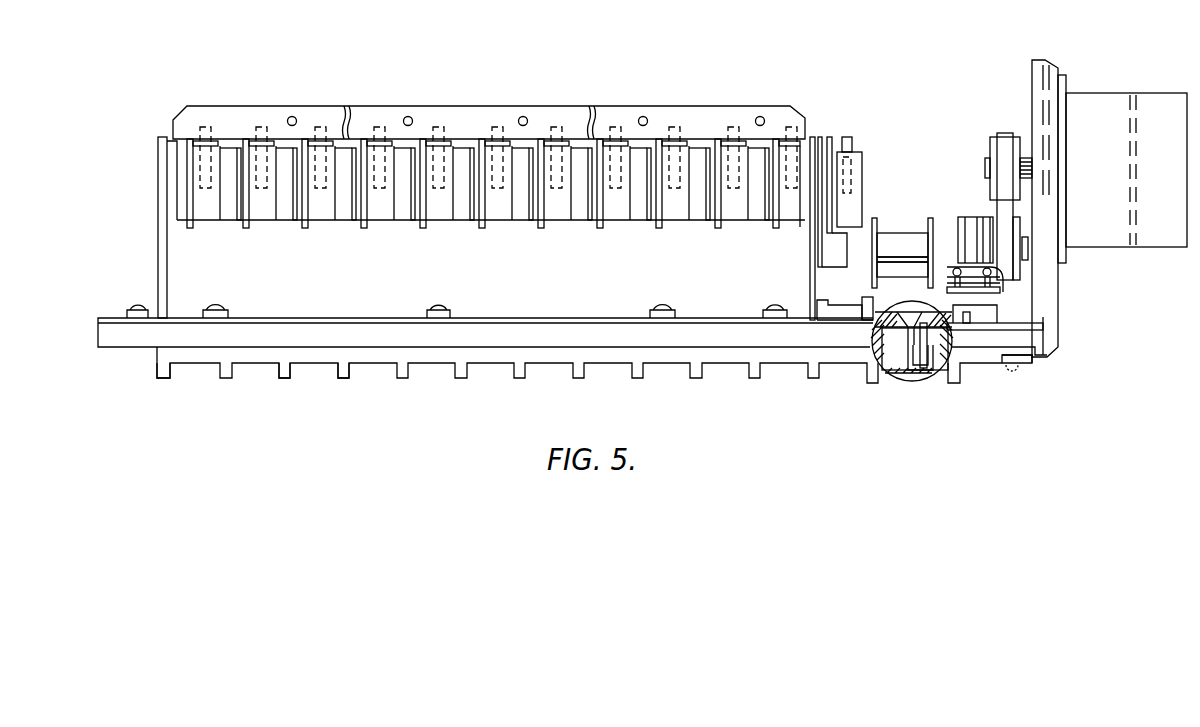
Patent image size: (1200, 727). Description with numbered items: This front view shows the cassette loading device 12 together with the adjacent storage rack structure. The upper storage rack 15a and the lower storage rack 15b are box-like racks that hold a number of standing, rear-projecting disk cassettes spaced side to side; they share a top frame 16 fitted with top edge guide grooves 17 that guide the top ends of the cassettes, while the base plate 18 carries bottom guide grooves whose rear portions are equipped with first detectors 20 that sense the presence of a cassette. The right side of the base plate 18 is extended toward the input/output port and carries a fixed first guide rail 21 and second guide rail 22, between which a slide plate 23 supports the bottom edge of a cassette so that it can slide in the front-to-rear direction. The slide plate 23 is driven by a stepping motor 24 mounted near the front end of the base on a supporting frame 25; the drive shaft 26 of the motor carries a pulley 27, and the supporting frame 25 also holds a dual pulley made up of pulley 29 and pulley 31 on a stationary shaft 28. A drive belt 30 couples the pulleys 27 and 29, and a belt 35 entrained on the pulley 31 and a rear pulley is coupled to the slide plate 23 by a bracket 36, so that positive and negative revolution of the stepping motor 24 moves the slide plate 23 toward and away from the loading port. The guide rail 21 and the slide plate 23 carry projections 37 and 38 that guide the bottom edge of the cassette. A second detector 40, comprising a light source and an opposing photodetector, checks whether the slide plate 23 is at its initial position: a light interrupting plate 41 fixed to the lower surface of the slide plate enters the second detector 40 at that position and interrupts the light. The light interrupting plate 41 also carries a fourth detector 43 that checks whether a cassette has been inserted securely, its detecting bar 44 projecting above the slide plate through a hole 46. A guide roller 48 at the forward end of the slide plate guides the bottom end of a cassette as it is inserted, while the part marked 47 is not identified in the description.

The loading device 12 is at (1040, 56).
The upper storage rack 15a is at (127, 303).
The lower storage rack 15b is at (161, 384).
The top frame 16 is at (157, 365).
The top edge guide grooves 17 is at (268, 373).
The base plate 18 is at (98, 335).
The first detectors 20 is at (672, 218).
The first guide rail 21 is at (845, 312).
The second guide rail 22 is at (1043, 325).
The slide plate 23 is at (867, 321).
The stepping motor 24 is at (1110, 103).
The supporting frame 25 is at (1052, 72).
The drive shaft 26 is at (988, 165).
The pulley 27 is at (992, 137).
The stationary shaft 28 is at (1028, 252).
The pulley 29 is at (1020, 223).
The drive belt 30 is at (1007, 182).
The pulley 31 is at (957, 220).
The belt 35 is at (975, 217).
The bracket 36 is at (975, 284).
The projection 37 is at (867, 297).
The projection 38 is at (957, 296).
The second detector 40 is at (913, 360).
The light interrupting plate 41 is at (937, 347).
The fourth detector 43 is at (890, 352).
The detecting bar 44 is at (905, 317).
The hole 46 is at (920, 305).
The pad 47 is at (938, 312).
The guide roller 48 is at (872, 220).